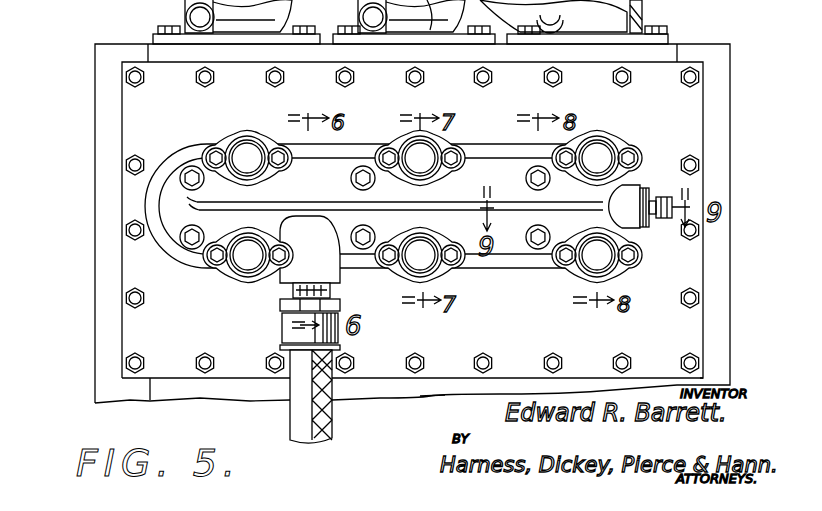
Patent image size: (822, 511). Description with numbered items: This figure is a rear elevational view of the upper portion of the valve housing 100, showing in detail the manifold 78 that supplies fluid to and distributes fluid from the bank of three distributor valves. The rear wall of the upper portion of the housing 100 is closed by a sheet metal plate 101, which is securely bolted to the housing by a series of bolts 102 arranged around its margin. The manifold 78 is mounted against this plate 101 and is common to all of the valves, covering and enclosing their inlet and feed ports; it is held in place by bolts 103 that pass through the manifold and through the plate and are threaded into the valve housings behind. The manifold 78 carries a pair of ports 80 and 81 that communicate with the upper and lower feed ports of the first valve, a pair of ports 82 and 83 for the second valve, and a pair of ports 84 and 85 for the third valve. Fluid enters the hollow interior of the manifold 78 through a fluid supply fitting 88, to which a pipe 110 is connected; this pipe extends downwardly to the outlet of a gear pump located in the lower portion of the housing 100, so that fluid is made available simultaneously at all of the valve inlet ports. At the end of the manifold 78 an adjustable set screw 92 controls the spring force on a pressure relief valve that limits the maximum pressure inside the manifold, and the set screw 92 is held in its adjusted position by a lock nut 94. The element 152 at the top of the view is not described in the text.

The manifold 78 is at (337, 166).
The port 80 is at (258, 118).
The port 81 is at (240, 280).
The port 82 is at (447, 142).
The port 83 is at (445, 277).
The port 84 is at (598, 148).
The port 85 is at (582, 276).
The fluid supply fitting 88 is at (332, 299).
The adjustable set screw 92 is at (664, 197).
The lock nut 94 is at (652, 226).
The housing 100 is at (118, 292).
The sheet metal plate 101 is at (705, 282).
The bolts 102 is at (705, 352).
The bolts 103 is at (465, 160).
The pipe 110 is at (332, 436).
The mounting bracket 152 is at (672, 38).